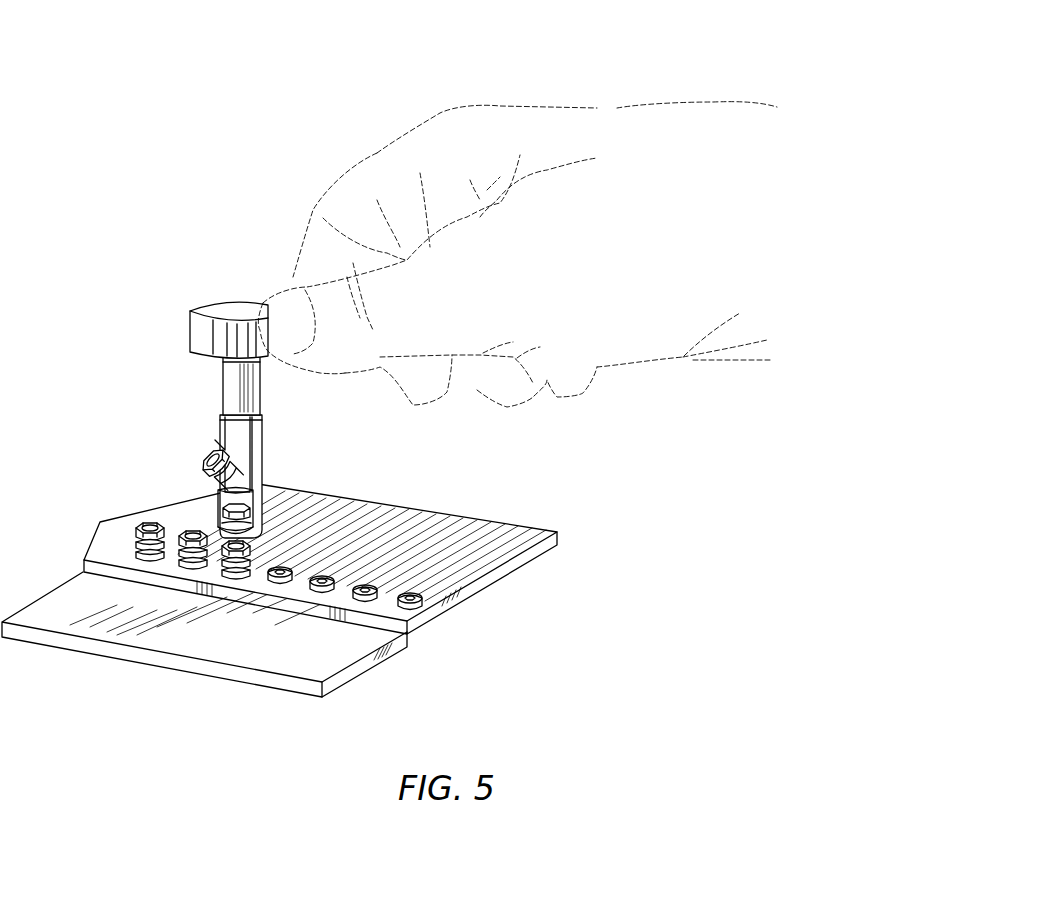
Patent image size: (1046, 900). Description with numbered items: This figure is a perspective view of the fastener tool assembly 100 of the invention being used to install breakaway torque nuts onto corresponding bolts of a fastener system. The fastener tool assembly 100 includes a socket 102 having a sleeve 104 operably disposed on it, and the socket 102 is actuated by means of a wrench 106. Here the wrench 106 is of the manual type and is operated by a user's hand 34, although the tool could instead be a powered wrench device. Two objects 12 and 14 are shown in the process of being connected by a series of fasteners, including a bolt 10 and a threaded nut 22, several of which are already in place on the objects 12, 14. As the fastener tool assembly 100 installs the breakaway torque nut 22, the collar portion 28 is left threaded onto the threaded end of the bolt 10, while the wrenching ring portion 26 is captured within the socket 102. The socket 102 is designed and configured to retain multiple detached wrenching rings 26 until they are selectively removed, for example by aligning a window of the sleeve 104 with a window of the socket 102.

The bolt 10 is at (375, 636).
The object 12 is at (473, 587).
The object 14 is at (343, 677).
The threaded nut 22 is at (137, 541).
The wrenching ring portion 26 is at (205, 470).
The collar portion 28 is at (405, 596).
The user's hand 34 is at (377, 153).
The fastener tool assembly 100 is at (207, 377).
The socket 102 is at (258, 395).
The sleeve 104 is at (260, 455).
The wrench 106 is at (217, 303).